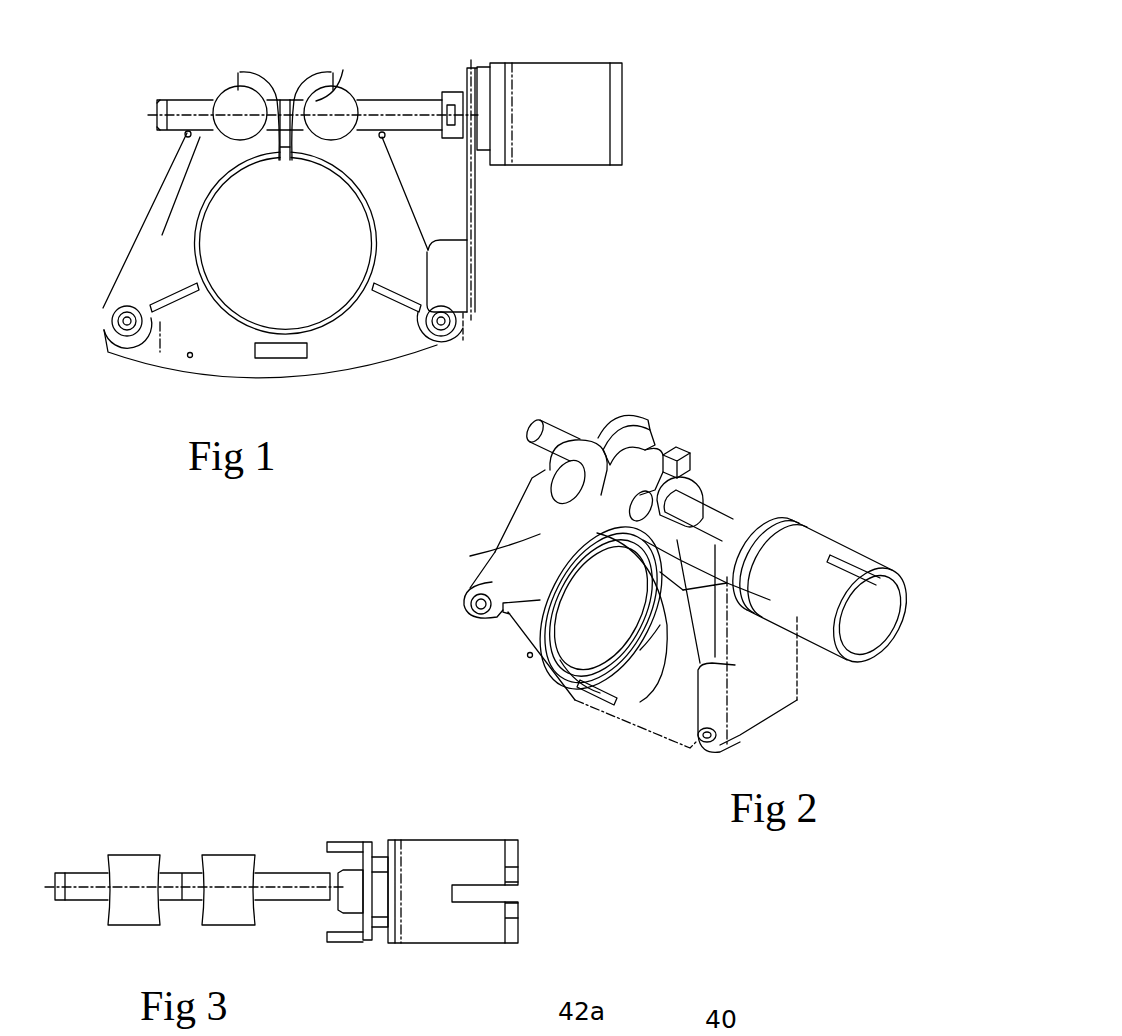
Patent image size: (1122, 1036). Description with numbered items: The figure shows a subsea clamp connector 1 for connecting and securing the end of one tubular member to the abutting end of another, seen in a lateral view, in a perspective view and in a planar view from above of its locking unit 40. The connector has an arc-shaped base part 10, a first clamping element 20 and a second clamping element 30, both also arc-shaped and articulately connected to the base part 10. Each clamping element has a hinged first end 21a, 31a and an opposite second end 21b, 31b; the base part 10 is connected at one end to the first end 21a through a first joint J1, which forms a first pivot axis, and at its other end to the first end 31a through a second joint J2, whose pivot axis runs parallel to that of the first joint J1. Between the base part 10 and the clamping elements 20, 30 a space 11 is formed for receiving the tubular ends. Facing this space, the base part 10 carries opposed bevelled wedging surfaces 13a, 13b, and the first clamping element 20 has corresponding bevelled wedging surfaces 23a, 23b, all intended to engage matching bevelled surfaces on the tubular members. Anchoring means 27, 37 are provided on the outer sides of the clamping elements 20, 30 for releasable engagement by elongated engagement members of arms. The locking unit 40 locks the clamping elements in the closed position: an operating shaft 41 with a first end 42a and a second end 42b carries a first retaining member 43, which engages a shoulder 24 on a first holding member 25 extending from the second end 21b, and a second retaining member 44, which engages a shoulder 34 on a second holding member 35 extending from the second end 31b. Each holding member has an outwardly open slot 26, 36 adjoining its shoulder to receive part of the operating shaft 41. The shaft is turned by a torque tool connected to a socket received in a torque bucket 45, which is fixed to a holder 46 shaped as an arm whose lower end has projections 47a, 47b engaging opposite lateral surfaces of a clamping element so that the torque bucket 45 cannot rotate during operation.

In FIG. 1, the subsea clamp connector 1 is at (185, 42).
In FIG. 2, the subsea clamp connector 1 is at (440, 607).
In FIG. 1, the base part 10 is at (345, 360).
In FIG. 2, the base part 10 is at (548, 660).
In FIG. 1, the space 11 is at (226, 249).
In FIG. 2, the space 11 is at (573, 598).
In FIG. 2, the bevelled wedging surface 13a is at (585, 653).
In FIG. 2, the bevelled wedging surface 13b is at (640, 652).
In FIG. 1, the first clamping element 20 is at (153, 233).
In FIG. 2, the first clamping element 20 is at (492, 563).
In FIG. 1, the hinged first end 21a is at (96, 333).
In FIG. 1, the second end 21b is at (280, 178).
In FIG. 2, the bevelled wedging surface 23a is at (543, 583).
In FIG. 2, the bevelled wedging surface 23b is at (495, 550).
In FIG. 1, the shoulder 24 is at (258, 97).
In FIG. 2, the shoulder 24 is at (588, 493).
In FIG. 1, the first holding member 25 is at (269, 90).
In FIG. 2, the first holding member 25 is at (643, 420).
In FIG. 2, the outwardly open slot 26 is at (608, 447).
In FIG. 1, the anchoring means 27 is at (173, 177).
In FIG. 2, the anchoring means 27 is at (522, 505).
In FIG. 1, the second clamping element 30 is at (378, 231).
In FIG. 2, the second clamping element 30 is at (681, 632).
In FIG. 1, the hinged first end 31a is at (476, 343).
In FIG. 1, the second end 31b is at (298, 177).
In FIG. 1, the shoulder 34 is at (322, 93).
In FIG. 2, the shoulder 34 is at (628, 507).
In FIG. 1, the second holding member 35 is at (308, 74).
In FIG. 2, the second holding member 35 is at (675, 453).
In FIG. 2, the outwardly open slot 36 is at (658, 453).
In FIG. 1, the anchoring means 37 is at (397, 178).
In FIG. 2, the anchoring means 37 is at (712, 583).
In FIG. 1, the locking unit 40 is at (411, 66).
In FIG. 2, the locking unit 40 is at (794, 494).
In FIG. 3, the locking unit 40 is at (289, 811).
In FIG. 1, the operating shaft 41 is at (415, 107).
In FIG. 2, the operating shaft 41 is at (713, 530).
In FIG. 3, the operating shaft 41 is at (275, 898).
In FIG. 1, the first end 42a is at (166, 86).
In FIG. 3, the first end 42a is at (62, 919).
In FIG. 1, the second end 42b is at (441, 141).
In FIG. 3, the second end 42b is at (331, 921).
In FIG. 1, the first retaining member 43 is at (238, 128).
In FIG. 3, the first retaining member 43 is at (133, 866).
In FIG. 1, the second retaining member 44 is at (335, 129).
In FIG. 2, the second retaining member 44 is at (695, 492).
In FIG. 3, the second retaining member 44 is at (228, 866).
In FIG. 1, the torque bucket 45 is at (576, 150).
In FIG. 2, the torque bucket 45 is at (816, 540).
In FIG. 3, the torque bucket 45 is at (456, 847).
In FIG. 1, the holder 46 is at (471, 191).
In FIG. 2, the holder 46 is at (785, 662).
In FIG. 3, the holder 46 is at (370, 848).
In FIG. 1, the projection 47a is at (428, 253).
In FIG. 2, the projection 47a is at (712, 707).
In FIG. 3, the projection 47a is at (350, 934).
In FIG. 3, the projection 47b is at (342, 843).
In FIG. 1, the first joint J1 is at (127, 325).
In FIG. 1, the second joint J2 is at (441, 325).